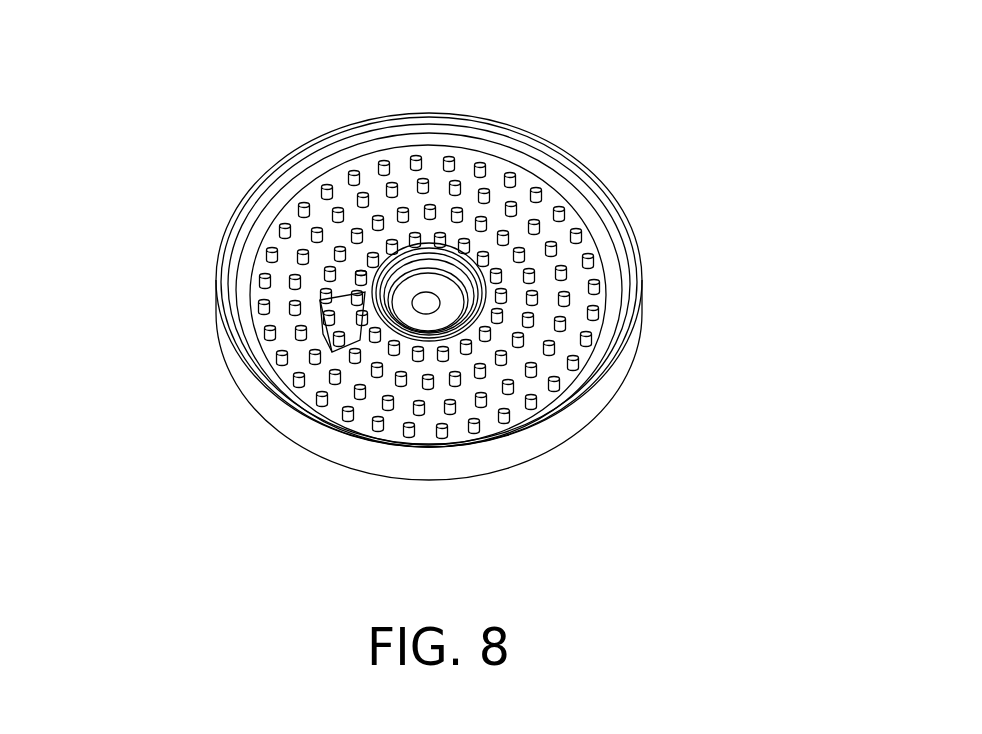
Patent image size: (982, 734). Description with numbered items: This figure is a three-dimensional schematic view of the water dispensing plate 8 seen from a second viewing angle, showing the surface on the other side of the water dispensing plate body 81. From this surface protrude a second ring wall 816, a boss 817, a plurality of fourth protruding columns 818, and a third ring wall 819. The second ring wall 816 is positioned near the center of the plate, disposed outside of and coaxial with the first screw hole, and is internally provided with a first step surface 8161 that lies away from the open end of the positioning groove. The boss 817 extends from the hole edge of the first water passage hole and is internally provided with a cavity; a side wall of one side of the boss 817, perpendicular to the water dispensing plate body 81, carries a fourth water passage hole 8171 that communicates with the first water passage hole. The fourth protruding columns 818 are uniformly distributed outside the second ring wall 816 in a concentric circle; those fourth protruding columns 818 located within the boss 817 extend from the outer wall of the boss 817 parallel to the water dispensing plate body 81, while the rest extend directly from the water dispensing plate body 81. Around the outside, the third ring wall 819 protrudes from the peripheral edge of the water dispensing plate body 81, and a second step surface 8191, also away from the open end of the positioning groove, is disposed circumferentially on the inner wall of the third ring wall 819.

The water dispensing plate 8 is at (710, 103).
The water dispensing plate body 81 is at (602, 332).
The second ring wall 816 is at (402, 242).
The first step surface 8161 is at (360, 267).
The boss 817 is at (320, 300).
The fourth water passage hole 8171 is at (320, 330).
The fourth protruding columns 818 is at (588, 268).
The third ring wall 819 is at (508, 441).
The second step surface 8191 is at (392, 133).